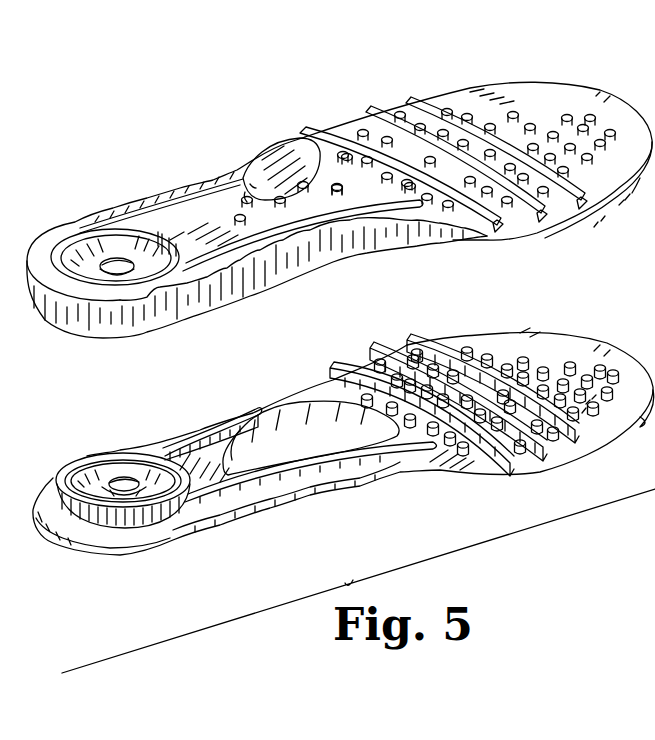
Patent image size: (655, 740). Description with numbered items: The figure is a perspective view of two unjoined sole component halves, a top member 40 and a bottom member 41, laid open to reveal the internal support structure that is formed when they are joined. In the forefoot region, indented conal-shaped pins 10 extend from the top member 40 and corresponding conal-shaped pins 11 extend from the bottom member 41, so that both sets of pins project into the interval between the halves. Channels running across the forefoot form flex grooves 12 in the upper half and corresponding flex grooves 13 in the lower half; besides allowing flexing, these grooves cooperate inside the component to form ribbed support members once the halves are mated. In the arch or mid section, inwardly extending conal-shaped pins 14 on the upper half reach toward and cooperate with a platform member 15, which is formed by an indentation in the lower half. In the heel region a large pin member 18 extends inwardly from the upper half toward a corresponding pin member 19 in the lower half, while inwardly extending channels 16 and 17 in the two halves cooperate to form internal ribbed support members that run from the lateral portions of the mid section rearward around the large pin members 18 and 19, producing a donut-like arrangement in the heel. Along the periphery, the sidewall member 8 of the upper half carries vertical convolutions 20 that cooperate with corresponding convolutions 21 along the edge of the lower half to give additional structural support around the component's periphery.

The sidewall member 8 is at (94, 328).
The conal-shaped pins 10 is at (393, 114).
The conal-shaped pins 11 is at (574, 363).
The flex grooves 12 is at (547, 214).
The flex grooves 13 is at (551, 473).
The conal-shaped pins 14 is at (293, 149).
The platform member 15 is at (306, 426).
The channel 16 is at (74, 240).
The channel 17 is at (71, 470).
The large pin member 18 is at (130, 258).
The pin member 19 is at (132, 480).
The vertical convolutions 20 is at (259, 287).
The convolutions 21 is at (203, 533).
The top member 40 is at (607, 48).
The bottom member 41 is at (606, 448).